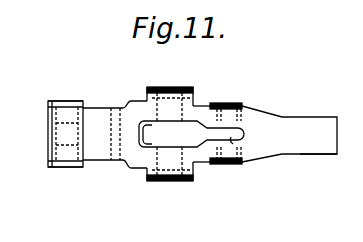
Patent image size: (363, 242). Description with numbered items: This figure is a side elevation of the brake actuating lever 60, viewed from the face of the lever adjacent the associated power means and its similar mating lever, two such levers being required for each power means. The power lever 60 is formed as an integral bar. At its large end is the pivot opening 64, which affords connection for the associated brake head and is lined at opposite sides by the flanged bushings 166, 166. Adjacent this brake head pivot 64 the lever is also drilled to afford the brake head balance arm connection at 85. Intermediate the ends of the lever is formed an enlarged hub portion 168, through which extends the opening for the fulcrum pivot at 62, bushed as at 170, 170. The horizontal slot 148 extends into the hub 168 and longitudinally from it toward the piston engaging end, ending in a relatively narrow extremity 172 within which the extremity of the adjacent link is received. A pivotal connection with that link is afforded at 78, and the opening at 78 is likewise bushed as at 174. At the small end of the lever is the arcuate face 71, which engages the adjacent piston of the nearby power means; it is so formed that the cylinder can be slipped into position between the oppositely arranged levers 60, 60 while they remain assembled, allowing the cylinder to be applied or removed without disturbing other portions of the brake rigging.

The actuating lever 60 is at (304, 116).
The fulcrum pivot opening 62 is at (166, 182).
The pivot opening 64 is at (72, 168).
The arcuate face 71 is at (317, 154).
The pivotal connection opening 78 is at (223, 163).
The brake head balance arm connection 85 is at (111, 160).
The horizontal slot 148 is at (143, 140).
The flanged bushing 166 is at (84, 101).
The enlarged hub portion 168 is at (196, 100).
The bushing 170 is at (153, 87).
The narrow extremity 172 is at (238, 142).
The bushing 174 is at (243, 107).